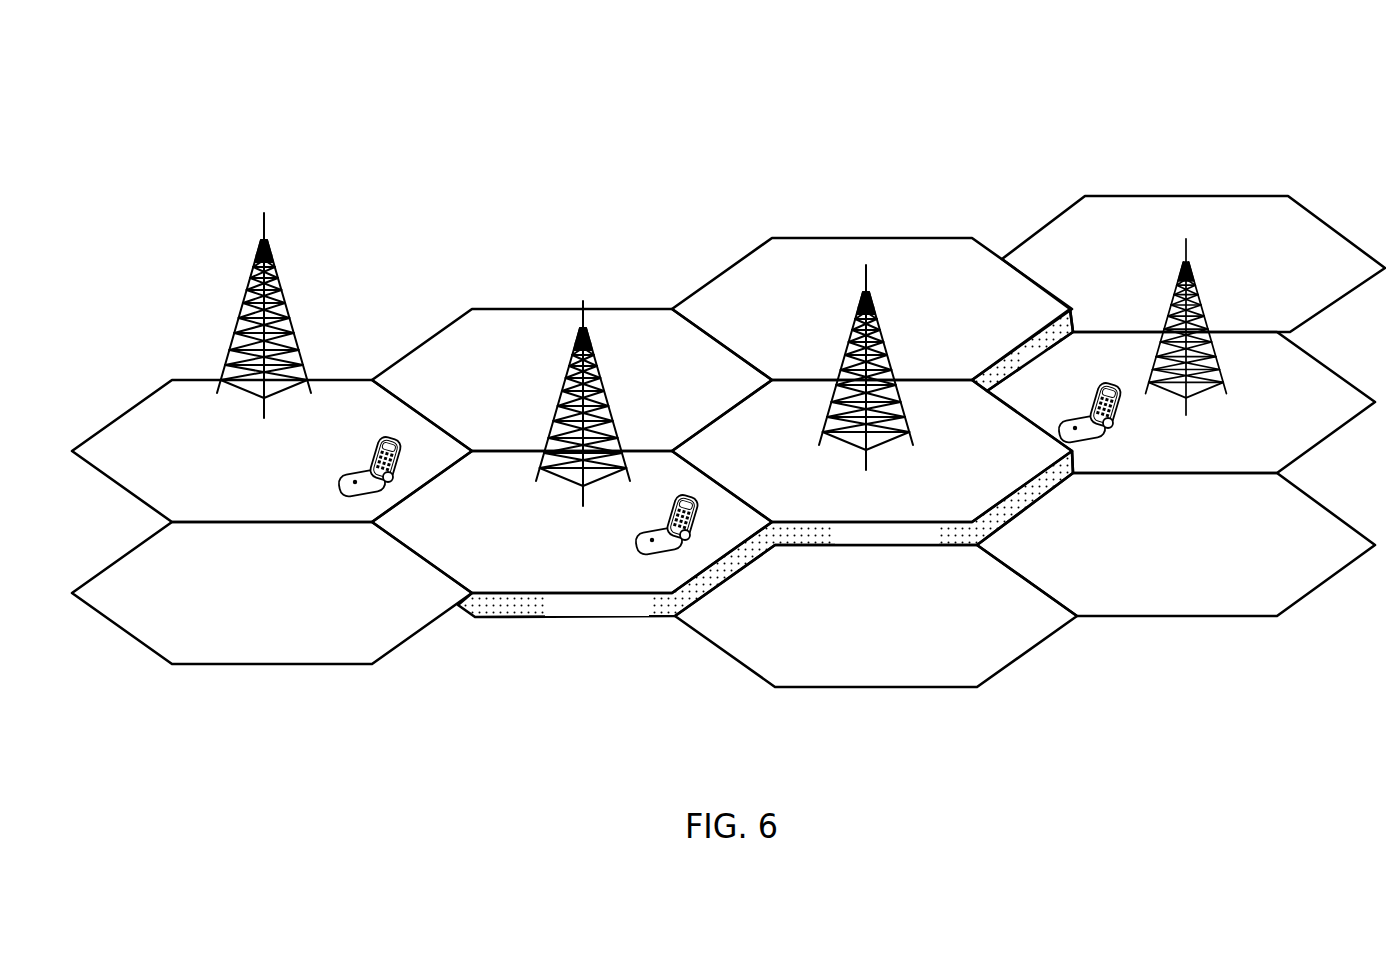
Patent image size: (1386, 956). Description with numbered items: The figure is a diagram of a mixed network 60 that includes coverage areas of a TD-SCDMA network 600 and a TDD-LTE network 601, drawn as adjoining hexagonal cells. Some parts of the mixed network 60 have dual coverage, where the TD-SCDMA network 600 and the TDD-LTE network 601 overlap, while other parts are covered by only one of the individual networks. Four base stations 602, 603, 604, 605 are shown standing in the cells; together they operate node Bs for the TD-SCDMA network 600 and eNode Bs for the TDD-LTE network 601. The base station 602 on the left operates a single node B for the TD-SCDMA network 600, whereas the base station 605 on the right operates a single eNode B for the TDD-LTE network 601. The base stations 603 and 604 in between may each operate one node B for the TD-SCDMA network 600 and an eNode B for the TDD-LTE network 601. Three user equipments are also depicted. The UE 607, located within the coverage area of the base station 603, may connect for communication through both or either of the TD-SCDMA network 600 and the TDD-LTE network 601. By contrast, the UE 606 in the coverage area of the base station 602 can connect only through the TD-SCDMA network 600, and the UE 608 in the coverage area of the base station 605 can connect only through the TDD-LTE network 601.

The mixed network 60 is at (279, 111).
The TD-SCDMA network 600 is at (150, 394).
The TDD-LTE network 601 is at (962, 689).
The base station 602 is at (262, 223).
The base station 603 is at (586, 330).
The base station 604 is at (865, 273).
The base station 605 is at (1181, 254).
The UE 606 is at (369, 438).
The UE 607 is at (672, 560).
The UE 608 is at (1106, 432).